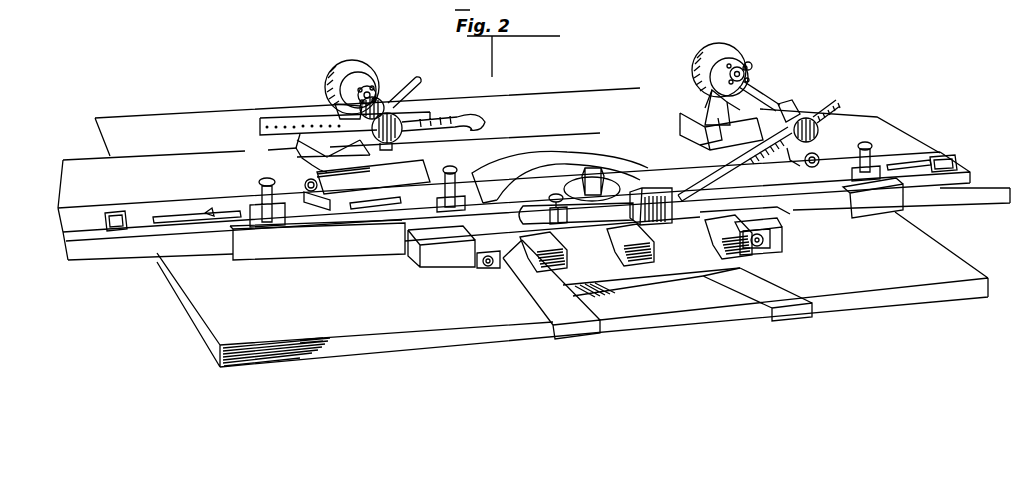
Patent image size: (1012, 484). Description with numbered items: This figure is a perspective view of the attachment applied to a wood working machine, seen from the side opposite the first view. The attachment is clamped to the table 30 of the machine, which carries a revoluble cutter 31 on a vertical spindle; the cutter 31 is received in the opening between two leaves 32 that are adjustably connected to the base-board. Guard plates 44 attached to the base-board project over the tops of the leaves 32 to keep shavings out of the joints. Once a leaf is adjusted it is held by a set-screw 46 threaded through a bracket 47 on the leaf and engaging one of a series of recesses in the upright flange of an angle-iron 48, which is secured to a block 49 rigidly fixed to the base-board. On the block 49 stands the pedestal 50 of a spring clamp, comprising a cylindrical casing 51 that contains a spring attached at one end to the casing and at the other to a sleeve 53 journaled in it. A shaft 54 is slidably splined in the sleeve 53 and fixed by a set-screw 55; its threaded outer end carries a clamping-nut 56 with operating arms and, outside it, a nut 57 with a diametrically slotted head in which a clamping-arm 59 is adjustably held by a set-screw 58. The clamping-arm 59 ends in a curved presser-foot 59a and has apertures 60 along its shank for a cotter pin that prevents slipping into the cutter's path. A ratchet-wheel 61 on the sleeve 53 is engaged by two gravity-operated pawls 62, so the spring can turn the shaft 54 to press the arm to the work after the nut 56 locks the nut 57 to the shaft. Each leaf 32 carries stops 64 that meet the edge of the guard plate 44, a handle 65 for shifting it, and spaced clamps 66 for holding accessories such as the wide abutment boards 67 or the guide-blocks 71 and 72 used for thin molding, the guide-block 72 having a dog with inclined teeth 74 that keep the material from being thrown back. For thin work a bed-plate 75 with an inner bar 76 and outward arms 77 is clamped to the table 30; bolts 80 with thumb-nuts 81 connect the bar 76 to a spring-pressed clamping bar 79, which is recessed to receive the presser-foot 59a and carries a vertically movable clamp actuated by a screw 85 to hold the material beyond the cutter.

The table 30 is at (340, 340).
The revoluble cutter 31 is at (578, 184).
The leaves 32 is at (58, 235).
The guard plates 44 is at (183, 199).
The set-screw 46 is at (312, 192).
The bracket 47 is at (322, 196).
The angle-iron 48 is at (312, 152).
The block 49 is at (660, 117).
The pedestal 50 is at (718, 116).
The cylindrical casing 51 is at (364, 68).
The sleeve 53 is at (404, 88).
The shaft 54 is at (768, 102).
The set-screw 55 is at (752, 68).
The clamping-nut 56 is at (406, 96).
The nut 57 is at (845, 103).
The set-screw 58 is at (388, 109).
The clamping-arm 59 is at (259, 126).
The curved presser-foot 59a is at (490, 115).
The apertures 60 is at (285, 125).
The ratchet-wheel 61 is at (376, 90).
The gravity-operated pawls 62 is at (340, 105).
The stops 64 is at (210, 215).
The handle 65 is at (117, 211).
The clamps 66 is at (262, 194).
The abutment boards 67 is at (404, 133).
The guide-block 71 is at (276, 243).
The guide-block 72 is at (894, 196).
The teeth 74 is at (637, 190).
The bed-plate 75 is at (585, 290).
The bar 76 is at (414, 266).
The arms 77 is at (581, 332).
The clamping bar 79 is at (793, 231).
The screws or bolts 80 is at (486, 252).
The thumb-nuts 81 is at (482, 263).
The screw 85 is at (550, 195).